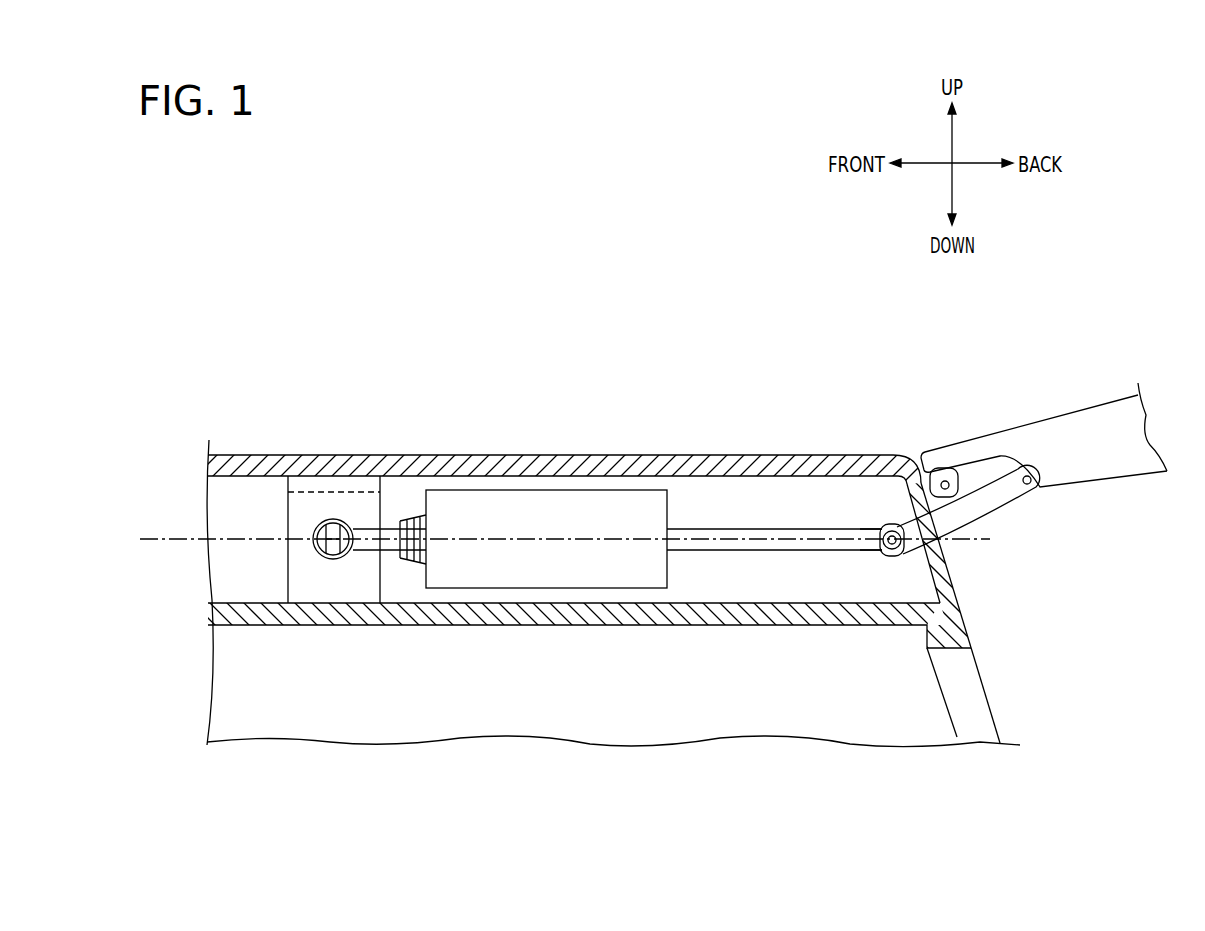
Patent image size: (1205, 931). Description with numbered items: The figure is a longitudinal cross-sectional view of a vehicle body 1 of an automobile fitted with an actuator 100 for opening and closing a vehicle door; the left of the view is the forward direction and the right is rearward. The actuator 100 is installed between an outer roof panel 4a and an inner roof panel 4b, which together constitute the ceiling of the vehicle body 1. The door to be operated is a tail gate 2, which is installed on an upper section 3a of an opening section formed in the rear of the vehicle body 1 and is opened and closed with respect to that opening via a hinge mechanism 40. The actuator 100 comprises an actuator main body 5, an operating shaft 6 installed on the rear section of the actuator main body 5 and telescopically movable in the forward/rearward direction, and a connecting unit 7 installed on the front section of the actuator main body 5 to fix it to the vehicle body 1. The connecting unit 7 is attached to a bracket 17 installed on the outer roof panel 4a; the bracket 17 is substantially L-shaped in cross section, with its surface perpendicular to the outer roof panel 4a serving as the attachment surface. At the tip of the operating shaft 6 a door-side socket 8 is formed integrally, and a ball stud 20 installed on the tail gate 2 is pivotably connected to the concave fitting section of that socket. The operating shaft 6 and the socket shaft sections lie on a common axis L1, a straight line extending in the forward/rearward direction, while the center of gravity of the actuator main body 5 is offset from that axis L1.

The vehicle body 1 is at (703, 383).
The tail gate 2 is at (1108, 460).
The upper section 3a is at (975, 657).
The outer roof panel 4a is at (528, 470).
The inner roof panel 4b is at (512, 624).
The actuator main body 5 is at (570, 562).
The operating shaft 6 is at (760, 552).
The connecting unit 7 is at (363, 554).
The door-side socket 8 is at (864, 552).
The bracket 17 is at (315, 508).
The ball stud 20 is at (892, 526).
The hinge mechanism 40 is at (993, 505).
The actuator 100 is at (597, 596).
The axis L1 is at (597, 535).